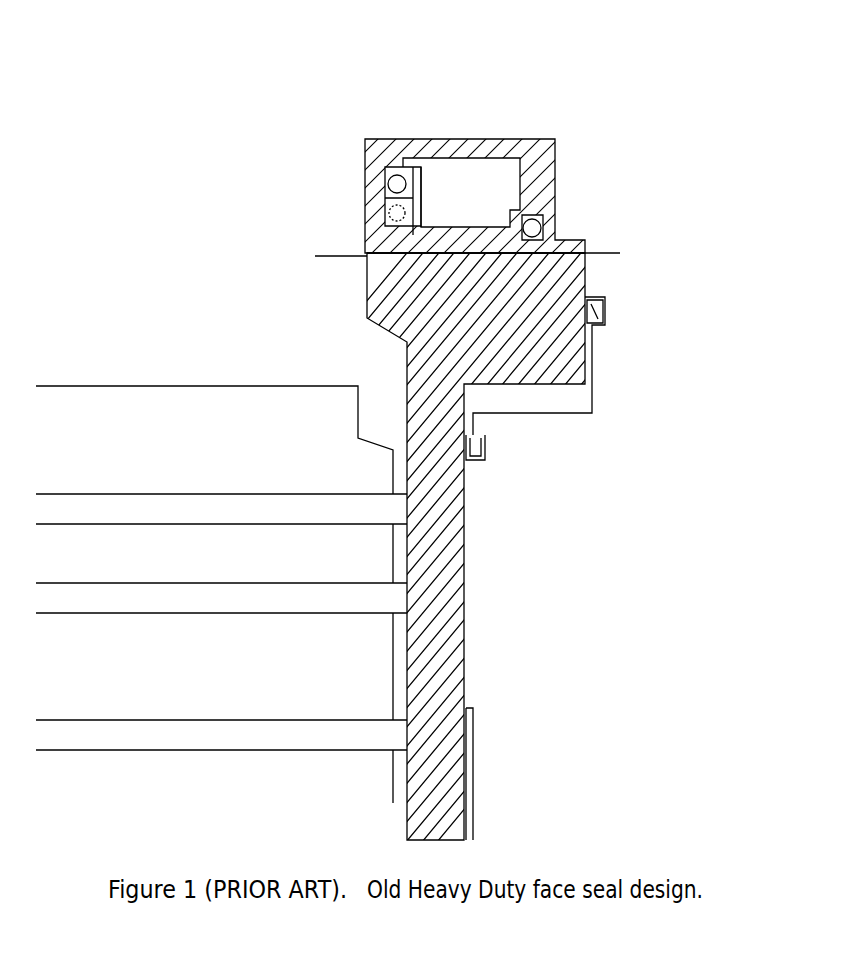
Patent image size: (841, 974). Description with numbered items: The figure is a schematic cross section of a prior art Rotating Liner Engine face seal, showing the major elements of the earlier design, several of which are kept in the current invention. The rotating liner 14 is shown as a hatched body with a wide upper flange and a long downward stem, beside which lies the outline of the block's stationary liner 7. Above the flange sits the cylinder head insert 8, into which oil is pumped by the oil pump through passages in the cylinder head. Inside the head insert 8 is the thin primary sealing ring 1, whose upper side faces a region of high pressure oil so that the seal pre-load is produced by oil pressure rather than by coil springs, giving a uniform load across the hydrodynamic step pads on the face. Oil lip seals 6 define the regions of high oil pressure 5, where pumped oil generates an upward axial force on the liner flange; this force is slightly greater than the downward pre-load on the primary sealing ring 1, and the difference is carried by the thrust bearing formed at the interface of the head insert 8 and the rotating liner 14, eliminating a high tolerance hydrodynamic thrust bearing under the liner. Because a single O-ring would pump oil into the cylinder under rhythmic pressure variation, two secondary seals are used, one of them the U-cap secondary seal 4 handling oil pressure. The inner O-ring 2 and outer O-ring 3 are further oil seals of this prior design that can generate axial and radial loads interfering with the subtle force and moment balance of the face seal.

The primary sealing ring 1 is at (467, 247).
The inner O-ring 2 is at (397, 183).
The outer O-ring 3 is at (531, 227).
The U-cap secondary seal 4 is at (392, 218).
The regions of high oil pressure 5 is at (478, 190).
The oil lip seals 6 is at (483, 452).
The outline of block's stationary liner 7 is at (475, 760).
The cylinder head insert 8 is at (503, 153).
The rotating liner 14 is at (435, 299).